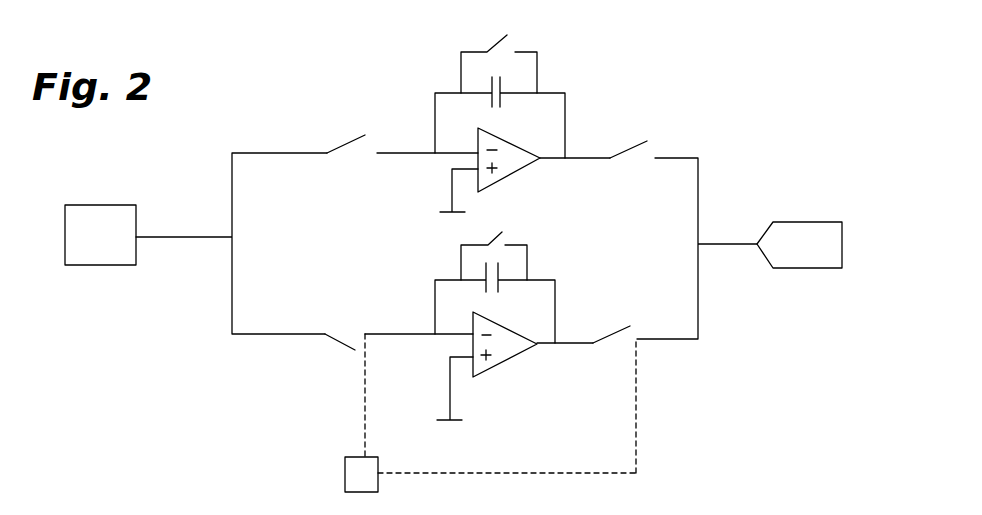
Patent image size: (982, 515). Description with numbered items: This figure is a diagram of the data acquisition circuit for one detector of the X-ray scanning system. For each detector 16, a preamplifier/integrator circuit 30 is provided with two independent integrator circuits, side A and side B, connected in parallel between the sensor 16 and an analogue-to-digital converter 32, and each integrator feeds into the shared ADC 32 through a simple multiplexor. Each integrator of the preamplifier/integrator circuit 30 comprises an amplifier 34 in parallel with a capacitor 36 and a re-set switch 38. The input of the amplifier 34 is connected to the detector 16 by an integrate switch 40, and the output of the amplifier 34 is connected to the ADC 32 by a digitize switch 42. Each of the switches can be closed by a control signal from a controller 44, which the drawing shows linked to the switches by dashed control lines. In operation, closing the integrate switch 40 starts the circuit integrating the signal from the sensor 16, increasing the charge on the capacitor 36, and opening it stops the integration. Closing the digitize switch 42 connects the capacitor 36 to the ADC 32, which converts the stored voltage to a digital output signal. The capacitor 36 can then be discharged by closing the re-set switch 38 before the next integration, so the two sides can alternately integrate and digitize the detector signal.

The detector 16 is at (100, 265).
The preamplifier/integrator circuit 30 is at (582, 71).
The analogue-to-digital converter 32 is at (803, 222).
The amplifier 34 is at (503, 363).
The capacitor 36 is at (485, 278).
The re-set switch 38 is at (518, 226).
The integrate switch 40 is at (341, 369).
The digitize switch 42 is at (682, 363).
The controller 44 is at (345, 475).